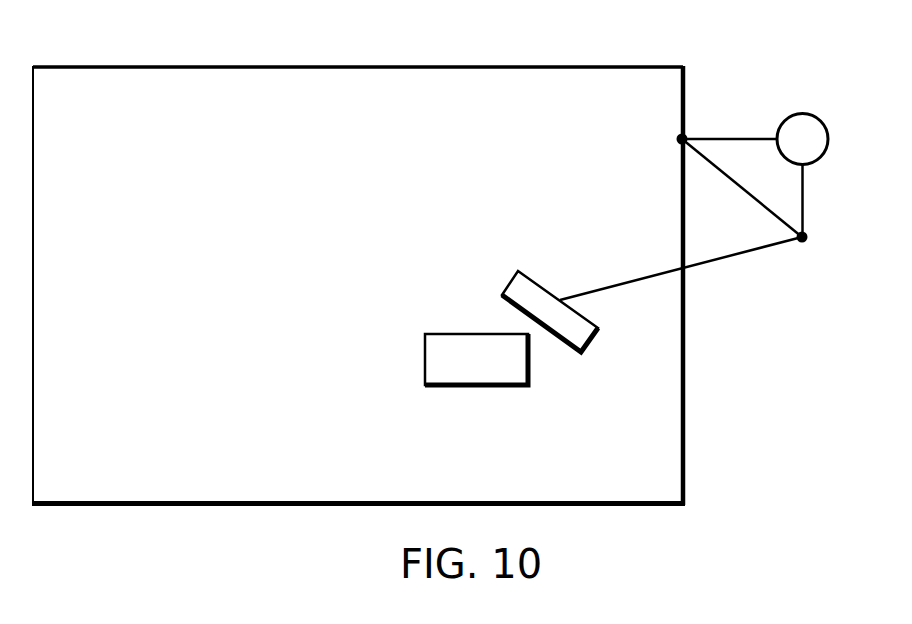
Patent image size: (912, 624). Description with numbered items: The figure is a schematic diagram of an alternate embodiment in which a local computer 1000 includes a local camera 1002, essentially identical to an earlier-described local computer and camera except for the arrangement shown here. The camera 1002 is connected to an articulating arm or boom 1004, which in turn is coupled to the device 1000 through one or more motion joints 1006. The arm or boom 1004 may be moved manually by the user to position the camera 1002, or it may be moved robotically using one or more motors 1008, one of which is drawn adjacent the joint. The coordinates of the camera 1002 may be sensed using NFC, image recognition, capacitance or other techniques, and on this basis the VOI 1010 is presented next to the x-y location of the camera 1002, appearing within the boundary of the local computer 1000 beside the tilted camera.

The local computer 1000 is at (358, 66).
The local camera 1002 is at (510, 280).
The articulating arm or boom 1004 is at (733, 257).
The motion joint 1006 is at (808, 238).
The motor 1008 is at (802, 114).
The VOI 1010 is at (424, 357).